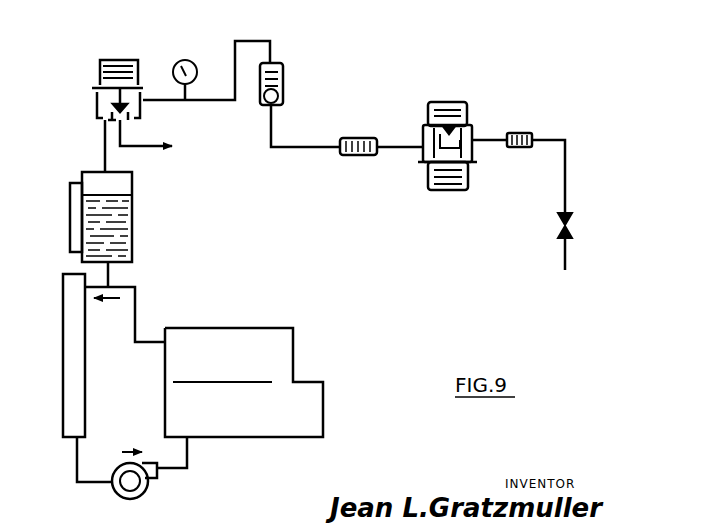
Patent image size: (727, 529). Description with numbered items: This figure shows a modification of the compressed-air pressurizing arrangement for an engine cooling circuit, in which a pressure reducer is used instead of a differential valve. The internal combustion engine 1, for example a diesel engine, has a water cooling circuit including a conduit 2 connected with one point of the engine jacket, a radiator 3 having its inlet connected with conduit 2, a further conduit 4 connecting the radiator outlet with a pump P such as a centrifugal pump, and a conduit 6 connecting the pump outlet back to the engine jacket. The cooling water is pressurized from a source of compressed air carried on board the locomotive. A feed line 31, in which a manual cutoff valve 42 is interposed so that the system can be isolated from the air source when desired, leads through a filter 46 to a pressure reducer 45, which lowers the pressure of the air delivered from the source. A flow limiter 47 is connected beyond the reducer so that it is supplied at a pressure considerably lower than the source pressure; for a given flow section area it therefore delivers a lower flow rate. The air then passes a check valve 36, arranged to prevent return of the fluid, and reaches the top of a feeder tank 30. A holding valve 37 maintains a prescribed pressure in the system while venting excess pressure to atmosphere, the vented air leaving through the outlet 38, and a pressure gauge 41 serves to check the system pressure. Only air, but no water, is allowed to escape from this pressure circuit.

The internal combustion engine 1 is at (290, 326).
The conduit 2 is at (137, 302).
The radiator 3 is at (64, 356).
The conduit 4 is at (77, 470).
The conduit 6 is at (190, 456).
The pump P is at (145, 496).
The feeder tank 30 is at (127, 243).
The feed line 31 is at (570, 256).
The check valve 36 is at (288, 92).
The holding valve 37 is at (102, 60).
The discharge outlet 38 is at (160, 150).
The pressure gauge 41 is at (186, 60).
The manual cutoff valve 42 is at (573, 226).
The pressure reducer 45 is at (492, 62).
The filter 46 is at (512, 130).
The flow limiter 47 is at (348, 138).